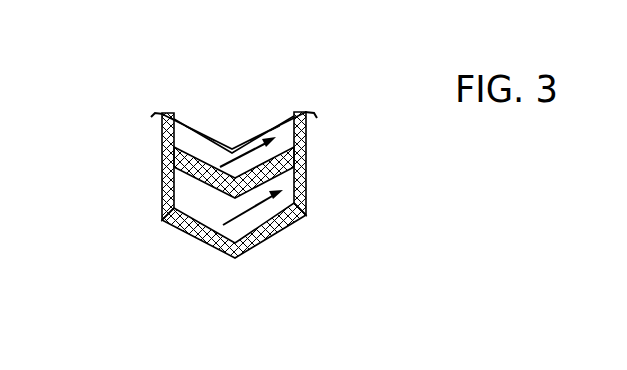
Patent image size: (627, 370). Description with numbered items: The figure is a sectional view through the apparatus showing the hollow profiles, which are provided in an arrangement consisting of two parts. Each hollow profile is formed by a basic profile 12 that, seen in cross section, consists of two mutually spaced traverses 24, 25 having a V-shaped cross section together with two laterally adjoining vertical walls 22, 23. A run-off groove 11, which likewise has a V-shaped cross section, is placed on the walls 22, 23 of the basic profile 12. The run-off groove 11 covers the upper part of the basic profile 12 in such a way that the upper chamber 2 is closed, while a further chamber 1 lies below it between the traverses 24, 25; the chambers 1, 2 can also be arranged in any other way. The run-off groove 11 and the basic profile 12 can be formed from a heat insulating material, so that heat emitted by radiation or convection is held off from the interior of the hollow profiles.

The chamber 1 is at (305, 180).
The upper chamber 2 is at (288, 128).
The run-off groove 11 is at (231, 133).
The basic profile 12 is at (165, 157).
The vertical wall 22 is at (162, 137).
The vertical wall 23 is at (305, 156).
The traverse 24 is at (176, 182).
The traverse 25 is at (305, 218).